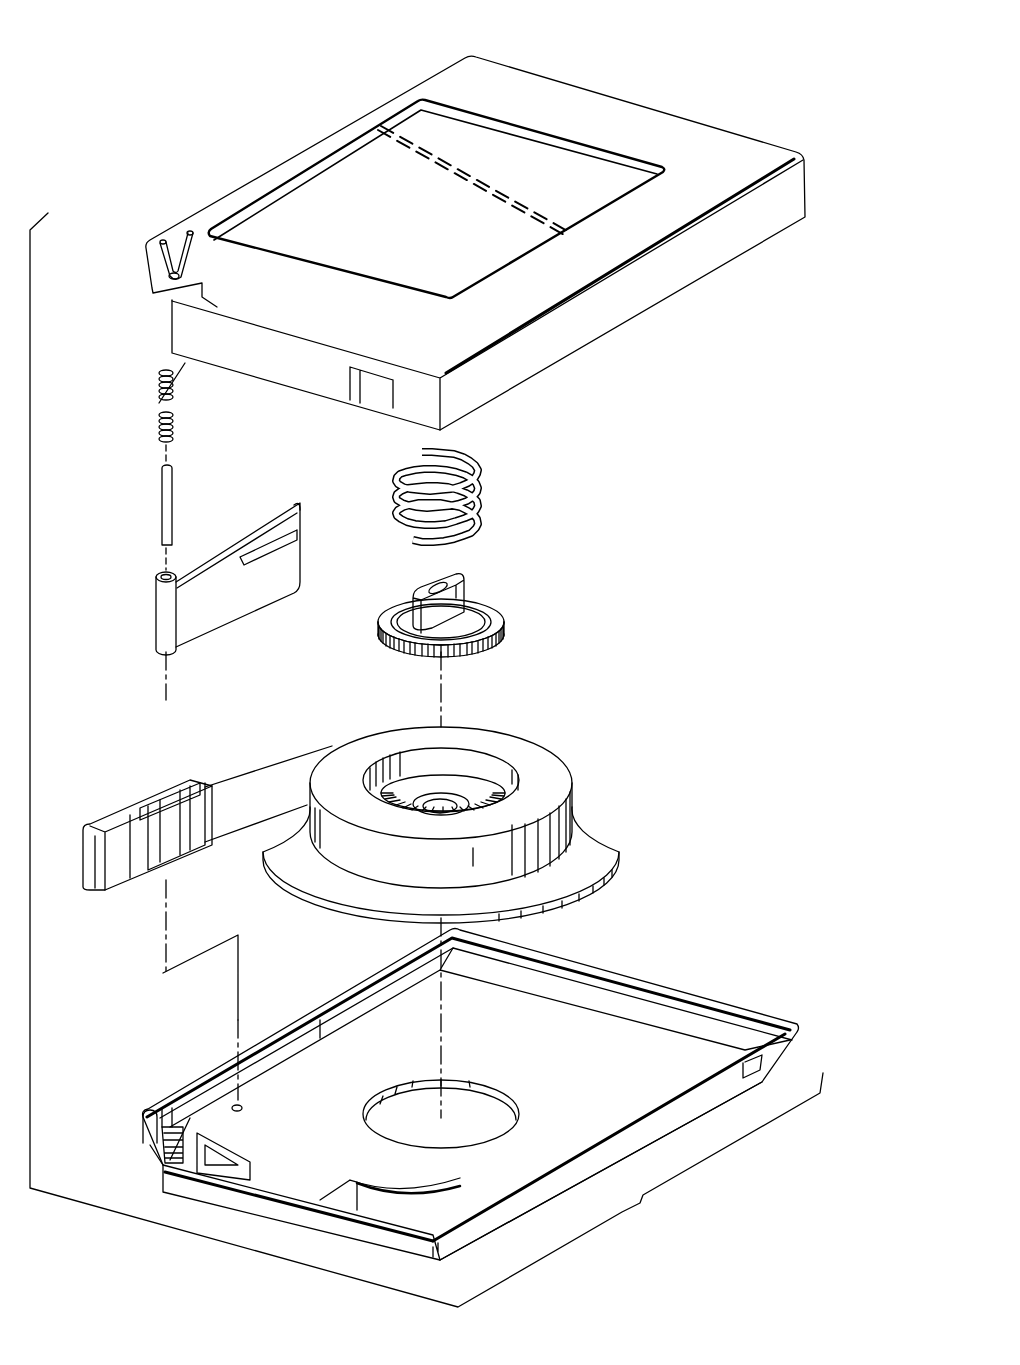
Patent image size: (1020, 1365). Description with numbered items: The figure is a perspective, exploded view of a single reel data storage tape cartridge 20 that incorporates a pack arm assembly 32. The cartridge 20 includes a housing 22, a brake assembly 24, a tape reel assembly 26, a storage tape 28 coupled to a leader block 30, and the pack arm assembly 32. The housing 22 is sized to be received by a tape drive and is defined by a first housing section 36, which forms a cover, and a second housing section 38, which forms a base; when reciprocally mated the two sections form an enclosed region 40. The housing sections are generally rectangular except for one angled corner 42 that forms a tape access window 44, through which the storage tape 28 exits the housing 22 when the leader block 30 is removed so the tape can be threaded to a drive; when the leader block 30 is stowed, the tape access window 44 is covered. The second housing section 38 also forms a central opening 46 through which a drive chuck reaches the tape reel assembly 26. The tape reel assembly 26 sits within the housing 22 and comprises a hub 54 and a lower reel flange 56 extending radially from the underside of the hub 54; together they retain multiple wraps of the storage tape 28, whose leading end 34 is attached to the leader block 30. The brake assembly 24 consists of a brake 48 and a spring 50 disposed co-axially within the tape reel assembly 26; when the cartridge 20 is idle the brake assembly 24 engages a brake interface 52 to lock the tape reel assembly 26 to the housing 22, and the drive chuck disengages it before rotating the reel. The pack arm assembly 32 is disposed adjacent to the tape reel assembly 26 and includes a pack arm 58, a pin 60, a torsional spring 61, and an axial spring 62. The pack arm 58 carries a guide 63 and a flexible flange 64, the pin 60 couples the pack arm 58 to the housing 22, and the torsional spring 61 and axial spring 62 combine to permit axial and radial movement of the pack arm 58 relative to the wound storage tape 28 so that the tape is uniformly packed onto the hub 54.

The data storage tape cartridge 20 is at (762, 78).
The housing 22 is at (764, 123).
The brake assembly 24 is at (589, 449).
The tape reel assembly 26 is at (694, 712).
The storage tape 28 is at (235, 787).
The leader block 30 is at (110, 799).
The pack arm assembly 32 is at (134, 366).
The leading end 34 is at (218, 806).
The first housing section 36 is at (577, 89).
The second housing section 38 is at (712, 1001).
The enclosed region 40 is at (582, 1025).
The corner 42 is at (147, 269).
The tape access window 44 is at (141, 1141).
The central opening 46 is at (483, 1093).
The brake 48 is at (500, 628).
The spring 50 is at (483, 503).
The brake interface 52 is at (403, 780).
The hub 54 is at (488, 760).
The reel flange 56 is at (607, 837).
The pack arm 58 is at (220, 622).
The pin 60 is at (173, 494).
The torsional spring 61 is at (178, 387).
The axial spring 62 is at (178, 430).
The guide 63 is at (264, 590).
The flexible flange 64 is at (287, 540).